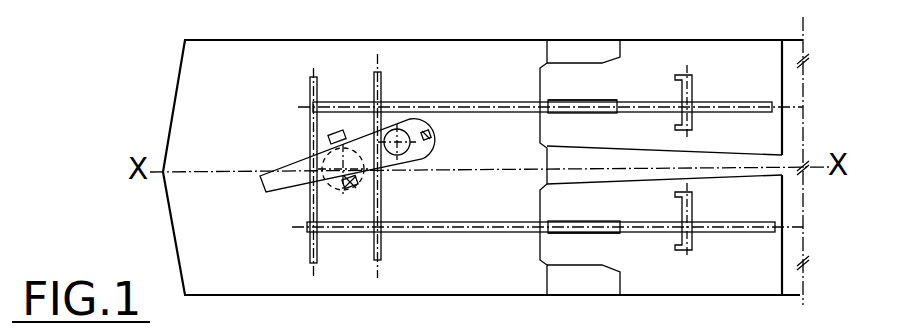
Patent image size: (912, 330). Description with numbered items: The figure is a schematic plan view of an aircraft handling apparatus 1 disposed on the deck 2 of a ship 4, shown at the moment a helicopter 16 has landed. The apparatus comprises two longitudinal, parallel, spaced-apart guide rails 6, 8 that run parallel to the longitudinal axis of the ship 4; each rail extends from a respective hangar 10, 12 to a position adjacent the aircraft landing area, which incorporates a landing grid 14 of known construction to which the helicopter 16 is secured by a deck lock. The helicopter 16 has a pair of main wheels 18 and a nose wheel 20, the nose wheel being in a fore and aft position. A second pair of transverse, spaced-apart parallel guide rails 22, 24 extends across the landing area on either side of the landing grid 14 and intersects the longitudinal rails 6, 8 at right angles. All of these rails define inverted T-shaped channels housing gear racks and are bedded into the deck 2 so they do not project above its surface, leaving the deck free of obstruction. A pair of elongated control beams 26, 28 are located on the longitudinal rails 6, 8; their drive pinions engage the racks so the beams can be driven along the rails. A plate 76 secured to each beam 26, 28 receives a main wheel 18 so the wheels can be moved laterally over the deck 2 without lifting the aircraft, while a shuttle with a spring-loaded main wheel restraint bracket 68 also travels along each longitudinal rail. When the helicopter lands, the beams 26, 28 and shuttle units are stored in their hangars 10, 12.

The aircraft handling apparatus 1 is at (290, 84).
The deck 2 is at (285, 210).
The ship 4 is at (607, 34).
The longitudinal guide rail 6 is at (484, 102).
The longitudinal guide rail 8 is at (474, 221).
The hangar 10 is at (651, 130).
The hangar 12 is at (640, 249).
The landing grid 14 is at (365, 178).
The helicopter 16 is at (293, 168).
The main wheels 18 is at (330, 136).
The nose wheel 20 is at (431, 135).
The transverse guide rail 22 is at (308, 249).
The transverse guide rail 24 is at (375, 257).
The control beam 26 is at (578, 85).
The control beam 28 is at (563, 212).
The main wheel restraint bracket 68 is at (692, 82).
The plate 76 is at (612, 115).